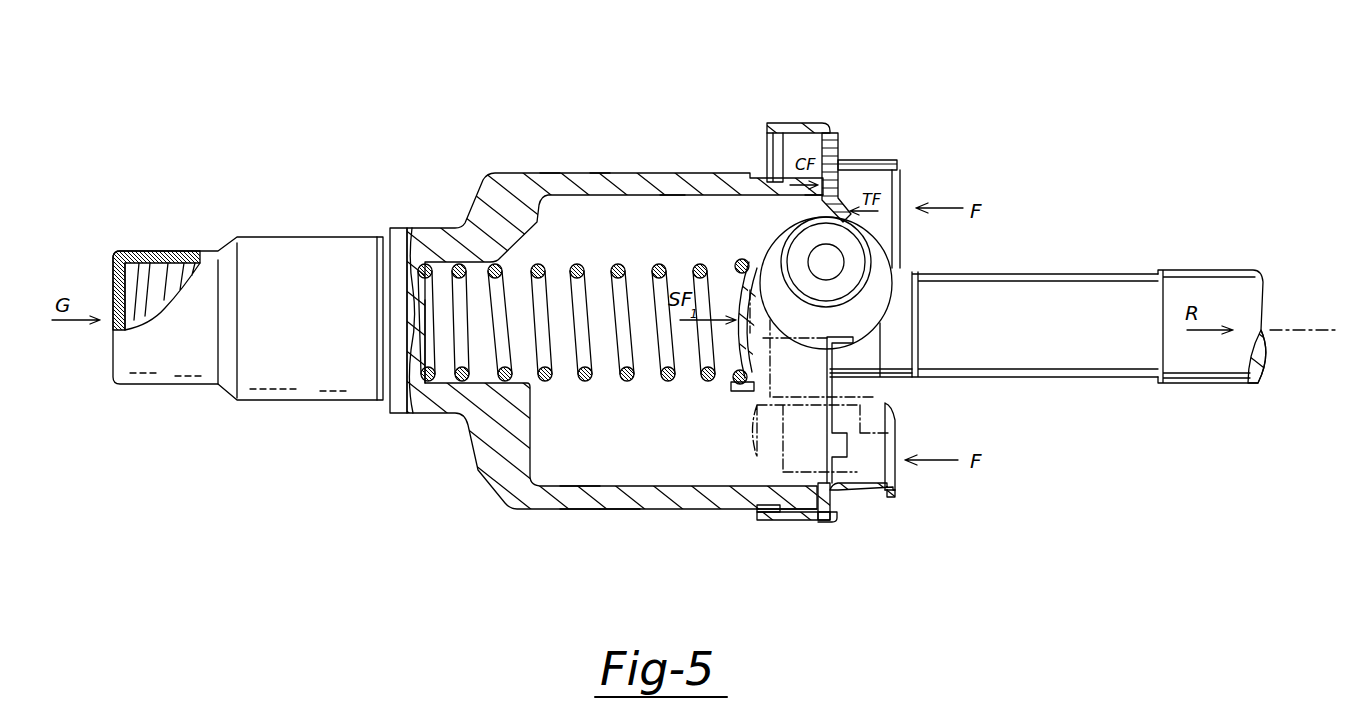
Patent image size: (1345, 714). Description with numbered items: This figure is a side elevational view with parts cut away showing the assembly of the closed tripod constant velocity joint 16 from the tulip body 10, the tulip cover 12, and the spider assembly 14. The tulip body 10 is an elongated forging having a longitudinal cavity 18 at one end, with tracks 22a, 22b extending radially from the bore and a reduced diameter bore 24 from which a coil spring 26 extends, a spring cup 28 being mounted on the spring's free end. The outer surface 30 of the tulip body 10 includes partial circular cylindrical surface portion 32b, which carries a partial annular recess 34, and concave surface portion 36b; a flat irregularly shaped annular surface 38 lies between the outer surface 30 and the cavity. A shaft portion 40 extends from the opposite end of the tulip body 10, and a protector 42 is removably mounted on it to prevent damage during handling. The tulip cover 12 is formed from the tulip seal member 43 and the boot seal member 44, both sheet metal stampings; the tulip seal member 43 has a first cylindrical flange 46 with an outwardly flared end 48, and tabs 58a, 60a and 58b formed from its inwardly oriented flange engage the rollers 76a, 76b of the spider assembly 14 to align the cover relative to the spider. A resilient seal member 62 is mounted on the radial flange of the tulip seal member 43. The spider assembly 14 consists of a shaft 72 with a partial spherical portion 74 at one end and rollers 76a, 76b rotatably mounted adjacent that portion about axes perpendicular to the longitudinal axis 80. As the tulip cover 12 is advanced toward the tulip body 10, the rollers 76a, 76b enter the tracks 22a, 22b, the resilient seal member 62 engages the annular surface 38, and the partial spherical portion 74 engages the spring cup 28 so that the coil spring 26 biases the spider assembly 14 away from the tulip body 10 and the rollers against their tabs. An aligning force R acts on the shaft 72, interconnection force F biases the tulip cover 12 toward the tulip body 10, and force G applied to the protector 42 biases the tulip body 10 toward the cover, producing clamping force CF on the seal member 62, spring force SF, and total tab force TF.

The tulip body 10 is at (509, 168).
The tulip cover 12 is at (872, 158).
The spider assembly 14 is at (924, 257).
The closed tripod constant velocity joint 16 is at (922, 78).
The longitudinal cavity 18 is at (585, 486).
The track 22a is at (672, 195).
The track 22b is at (593, 468).
The reduced diameter bore 24 is at (435, 375).
The coil spring 26 is at (620, 268).
The spring cup 28 is at (738, 400).
The outer surface 30 is at (598, 172).
The partial circular cylindrical surface portion 32b is at (627, 511).
The partial annular recess 34 is at (758, 515).
The concave surface portion 36b is at (550, 172).
The annular surface 38 is at (832, 497).
The shaft portion 40 is at (177, 263).
The protector 42 is at (300, 323).
The tulip seal member 43 is at (768, 123).
The boot seal member 44 is at (868, 492).
The first cylindrical flange 46 is at (785, 523).
The outwardly flared end 48 is at (765, 520).
The tab 58a is at (838, 212).
The tab 58b is at (840, 445).
The tab 60a is at (840, 352).
The resilient seal member 62 is at (817, 193).
The shaft 72 is at (1060, 275).
The partial spherical portion 74 is at (745, 345).
The roller 76a is at (882, 288).
The roller 76b is at (882, 447).
The longitudinal axis 80 is at (1283, 330).